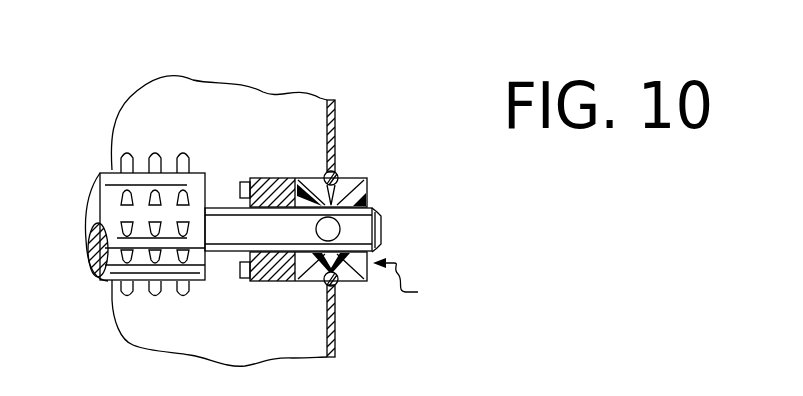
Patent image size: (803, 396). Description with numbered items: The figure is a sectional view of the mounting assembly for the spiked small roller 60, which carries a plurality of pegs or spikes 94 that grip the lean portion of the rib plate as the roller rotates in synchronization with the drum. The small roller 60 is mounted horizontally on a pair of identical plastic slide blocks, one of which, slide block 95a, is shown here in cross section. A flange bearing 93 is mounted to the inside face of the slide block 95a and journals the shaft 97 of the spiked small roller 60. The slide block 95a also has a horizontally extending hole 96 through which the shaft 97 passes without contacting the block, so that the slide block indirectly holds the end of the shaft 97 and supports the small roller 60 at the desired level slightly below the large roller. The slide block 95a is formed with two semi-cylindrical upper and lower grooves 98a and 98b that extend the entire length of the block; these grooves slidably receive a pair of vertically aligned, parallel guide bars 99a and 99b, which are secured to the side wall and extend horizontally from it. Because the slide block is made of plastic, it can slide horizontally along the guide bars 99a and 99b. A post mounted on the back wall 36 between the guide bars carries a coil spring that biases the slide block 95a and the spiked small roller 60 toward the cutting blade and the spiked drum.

The back wall 36 is at (337, 108).
The spiked small roller 60 is at (105, 193).
The flange bearing 93 is at (278, 273).
The pegs or spikes 94 is at (143, 155).
The slide block 95a is at (417, 283).
The horizontally extending hole 96 is at (375, 207).
The shaft 97 is at (223, 228).
The upper groove 98a is at (352, 180).
The lower groove 98b is at (337, 283).
The upper guide bar 99a is at (338, 170).
The lower guide bar 99b is at (334, 285).